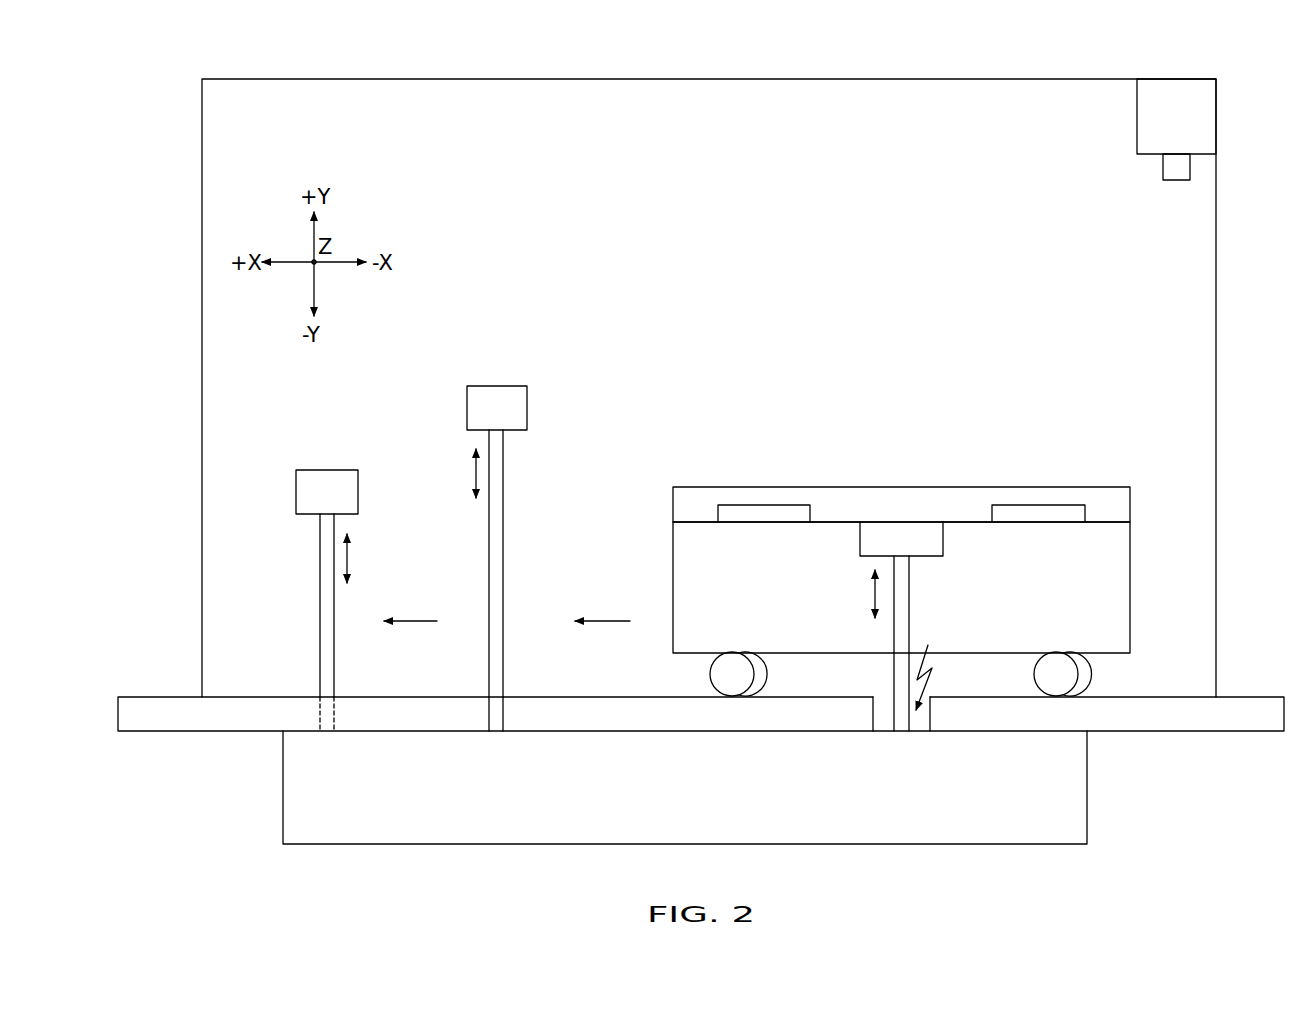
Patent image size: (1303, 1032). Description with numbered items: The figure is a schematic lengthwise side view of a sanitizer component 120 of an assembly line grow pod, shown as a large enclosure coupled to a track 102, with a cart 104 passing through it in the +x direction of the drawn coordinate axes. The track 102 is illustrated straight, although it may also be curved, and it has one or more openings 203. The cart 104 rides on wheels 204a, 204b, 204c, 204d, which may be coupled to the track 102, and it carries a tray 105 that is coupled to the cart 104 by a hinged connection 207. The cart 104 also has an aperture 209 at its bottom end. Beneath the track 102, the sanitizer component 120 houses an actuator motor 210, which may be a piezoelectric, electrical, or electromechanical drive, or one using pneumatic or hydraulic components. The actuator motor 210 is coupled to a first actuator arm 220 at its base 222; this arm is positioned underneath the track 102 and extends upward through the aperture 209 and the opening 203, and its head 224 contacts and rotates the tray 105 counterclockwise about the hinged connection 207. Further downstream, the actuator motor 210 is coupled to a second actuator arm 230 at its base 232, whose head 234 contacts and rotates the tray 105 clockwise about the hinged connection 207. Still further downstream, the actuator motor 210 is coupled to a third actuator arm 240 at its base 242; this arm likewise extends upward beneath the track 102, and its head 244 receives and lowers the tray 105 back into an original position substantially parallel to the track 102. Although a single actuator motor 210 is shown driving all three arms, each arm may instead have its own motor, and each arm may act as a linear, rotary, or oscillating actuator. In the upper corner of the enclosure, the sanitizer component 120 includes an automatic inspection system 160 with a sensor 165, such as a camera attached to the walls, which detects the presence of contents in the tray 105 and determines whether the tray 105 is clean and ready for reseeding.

The sanitizer component 120 is at (500, 78).
The automatic inspection system 160 is at (1198, 129).
The sensor 165 is at (1163, 172).
The head 244 is at (327, 469).
The third actuator arm 240 is at (320, 585).
The base 242 is at (330, 737).
The head 234 is at (498, 385).
The second actuator arm 230 is at (503, 565).
The base 232 is at (498, 735).
The track 102 is at (740, 722).
The actuator motor 210 is at (847, 802).
The tray 105 is at (922, 519).
The cart 104 is at (1112, 642).
The hinged connection 207 is at (752, 522).
The head 224 is at (943, 543).
The first actuator arm 220 is at (909, 577).
The base 222 is at (901, 733).
The aperture 209 is at (835, 610).
The opening 203 is at (933, 664).
The wheel 204a is at (710, 682).
The wheel 204b is at (768, 668).
The wheel 204c is at (1036, 690).
The wheel 204d is at (1093, 676).